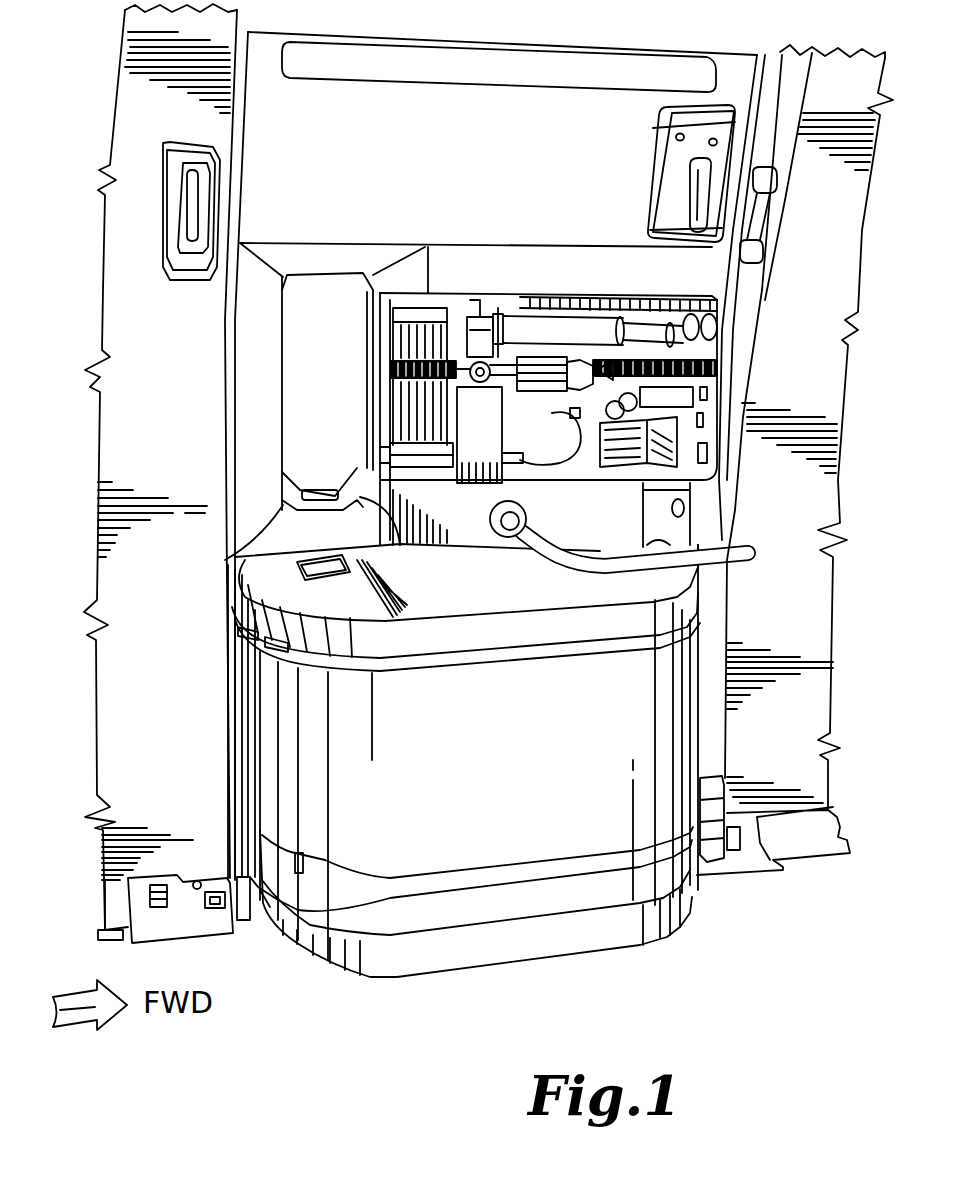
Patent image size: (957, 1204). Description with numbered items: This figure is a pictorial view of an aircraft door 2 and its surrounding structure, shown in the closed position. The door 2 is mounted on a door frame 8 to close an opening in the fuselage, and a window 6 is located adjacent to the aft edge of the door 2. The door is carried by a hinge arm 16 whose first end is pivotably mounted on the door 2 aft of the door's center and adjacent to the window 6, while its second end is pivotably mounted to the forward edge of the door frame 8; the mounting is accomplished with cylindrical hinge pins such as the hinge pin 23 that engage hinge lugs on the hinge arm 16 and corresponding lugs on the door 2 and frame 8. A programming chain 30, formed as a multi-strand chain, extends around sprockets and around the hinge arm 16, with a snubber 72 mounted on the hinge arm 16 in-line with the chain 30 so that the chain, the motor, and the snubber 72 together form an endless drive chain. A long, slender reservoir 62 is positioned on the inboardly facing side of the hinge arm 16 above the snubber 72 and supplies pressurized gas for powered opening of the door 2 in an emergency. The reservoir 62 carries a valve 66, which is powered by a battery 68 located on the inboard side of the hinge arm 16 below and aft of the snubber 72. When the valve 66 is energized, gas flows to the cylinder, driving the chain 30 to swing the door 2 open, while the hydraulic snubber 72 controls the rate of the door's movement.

The aircraft door 2 is at (292, 977).
The window 6 is at (330, 343).
The door frame 8 is at (743, 315).
The hinge arm 16 is at (567, 483).
The hinge pin 23 is at (460, 372).
The programming chain 30 is at (450, 320).
The reservoir 62 is at (550, 327).
The valve 66 is at (473, 317).
The battery 68 is at (537, 390).
The snubber 72 is at (477, 435).